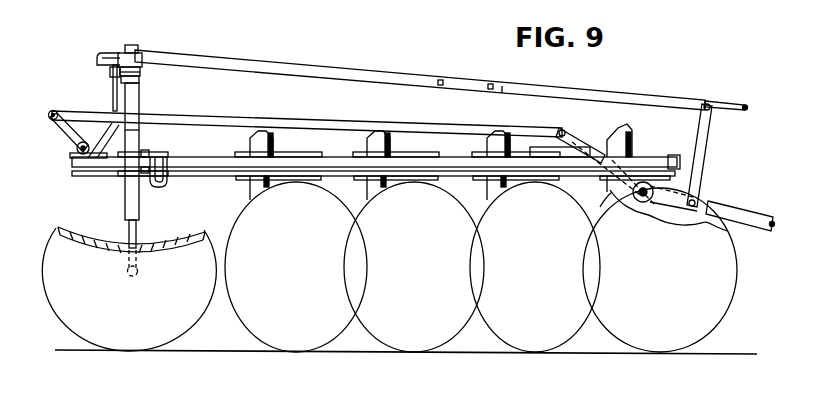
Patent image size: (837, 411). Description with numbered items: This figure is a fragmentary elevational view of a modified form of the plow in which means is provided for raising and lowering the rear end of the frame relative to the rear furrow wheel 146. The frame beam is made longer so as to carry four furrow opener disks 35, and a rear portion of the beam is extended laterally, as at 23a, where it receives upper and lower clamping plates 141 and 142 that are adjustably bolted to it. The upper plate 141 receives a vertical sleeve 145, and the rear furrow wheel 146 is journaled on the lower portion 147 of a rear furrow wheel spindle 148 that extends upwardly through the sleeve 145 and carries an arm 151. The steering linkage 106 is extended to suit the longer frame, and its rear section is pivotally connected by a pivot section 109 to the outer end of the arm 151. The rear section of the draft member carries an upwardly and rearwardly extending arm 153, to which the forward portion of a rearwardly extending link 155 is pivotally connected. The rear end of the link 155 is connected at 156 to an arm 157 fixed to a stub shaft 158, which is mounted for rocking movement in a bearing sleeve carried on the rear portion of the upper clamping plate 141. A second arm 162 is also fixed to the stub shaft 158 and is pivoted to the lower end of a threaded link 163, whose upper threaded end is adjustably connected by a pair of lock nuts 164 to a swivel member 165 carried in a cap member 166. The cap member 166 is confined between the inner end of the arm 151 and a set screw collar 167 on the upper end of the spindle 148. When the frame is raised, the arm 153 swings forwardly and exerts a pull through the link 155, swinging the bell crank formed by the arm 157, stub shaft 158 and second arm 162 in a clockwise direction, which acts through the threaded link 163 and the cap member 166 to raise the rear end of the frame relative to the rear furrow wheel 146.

The laterally extended rear portion of plow beam 23a is at (140, 182).
The furrow opener disk 35 is at (392, 336).
The steering linkage 106 is at (417, 68).
The pivot section 109 is at (107, 55).
The upper clamping plate 141 is at (151, 158).
The lower clamping plate 142 is at (160, 170).
The vertical sleeve 145 is at (125, 201).
The rear furrow wheel 146 is at (166, 334).
The lower portion of spindle 147 is at (140, 272).
The rear furrow wheel spindle 148 is at (143, 228).
The arm 151 is at (134, 50).
The upwardly and rearwardly extending arm 153 is at (577, 143).
The rearwardly extending link 155 is at (358, 128).
The pivot connection of link to arm 156 is at (51, 110).
The arm 157 is at (67, 140).
The stub shaft 158 is at (78, 153).
The second arm 162 is at (104, 143).
The threaded link 163 is at (113, 98).
The lock nuts 164 is at (110, 73).
The swivel member 165 is at (141, 78).
The cap member 166 is at (138, 60).
The set screw collar 167 is at (140, 88).